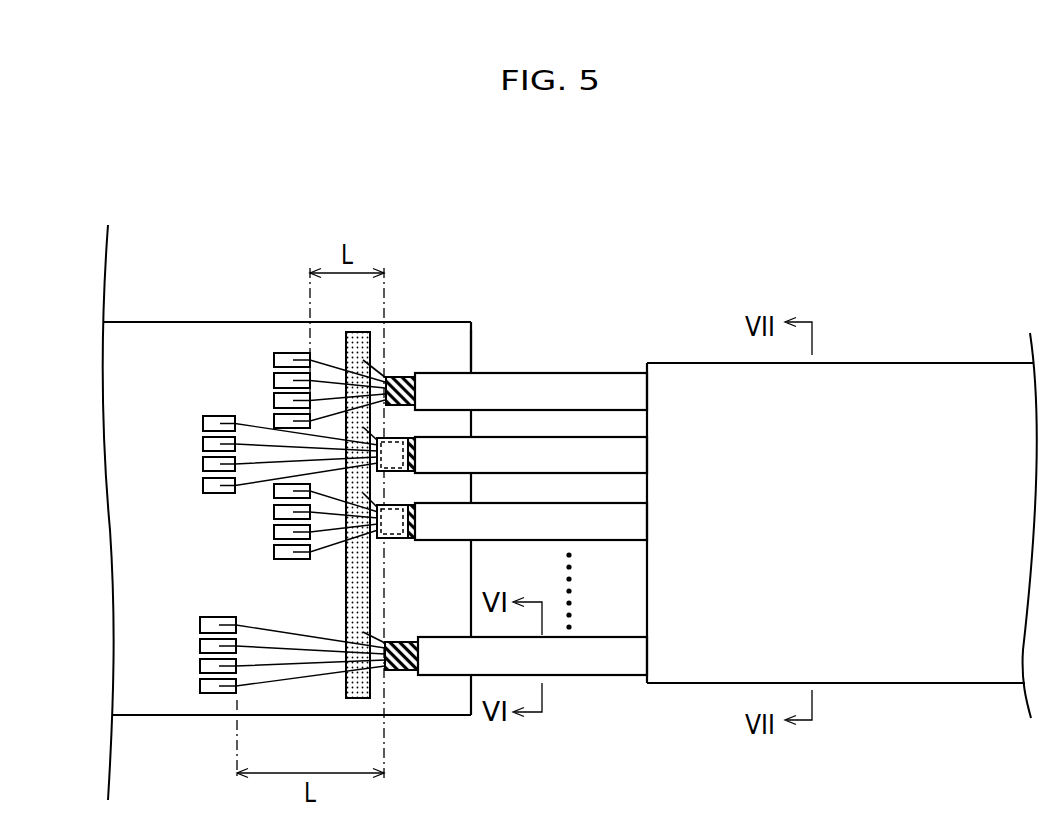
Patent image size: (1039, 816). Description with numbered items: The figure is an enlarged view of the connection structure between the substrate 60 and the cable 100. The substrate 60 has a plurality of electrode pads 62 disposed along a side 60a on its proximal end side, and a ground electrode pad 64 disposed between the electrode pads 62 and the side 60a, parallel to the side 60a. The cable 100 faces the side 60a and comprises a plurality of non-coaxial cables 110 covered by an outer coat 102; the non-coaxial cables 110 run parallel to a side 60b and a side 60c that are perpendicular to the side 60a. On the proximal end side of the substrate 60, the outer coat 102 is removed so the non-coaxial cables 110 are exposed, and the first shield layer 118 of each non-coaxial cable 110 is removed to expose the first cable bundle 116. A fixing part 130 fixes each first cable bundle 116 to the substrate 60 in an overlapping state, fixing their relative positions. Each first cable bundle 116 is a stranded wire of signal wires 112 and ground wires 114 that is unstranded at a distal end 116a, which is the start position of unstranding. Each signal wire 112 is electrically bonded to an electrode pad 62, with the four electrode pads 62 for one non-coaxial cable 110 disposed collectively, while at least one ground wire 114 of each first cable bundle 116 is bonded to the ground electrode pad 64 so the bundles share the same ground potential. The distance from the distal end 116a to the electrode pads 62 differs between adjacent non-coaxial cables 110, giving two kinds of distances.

The cable 100 is at (864, 291).
The outer coat 102 is at (930, 363).
The non-coaxial cable 110 is at (632, 341).
The signal wire 112 is at (255, 418).
The ground wire 114 is at (363, 632).
The first cable bundle 116 is at (412, 366).
The distal end 116a is at (386, 377).
The first shield layer 118 is at (578, 373).
The fixing part 130 is at (393, 540).
The substrate 60 is at (149, 395).
The side 60a is at (472, 345).
The side 60b is at (157, 321).
The side 60c is at (158, 716).
The electrode pad 62 is at (203, 464).
The ground electrode pad 64 is at (348, 600).